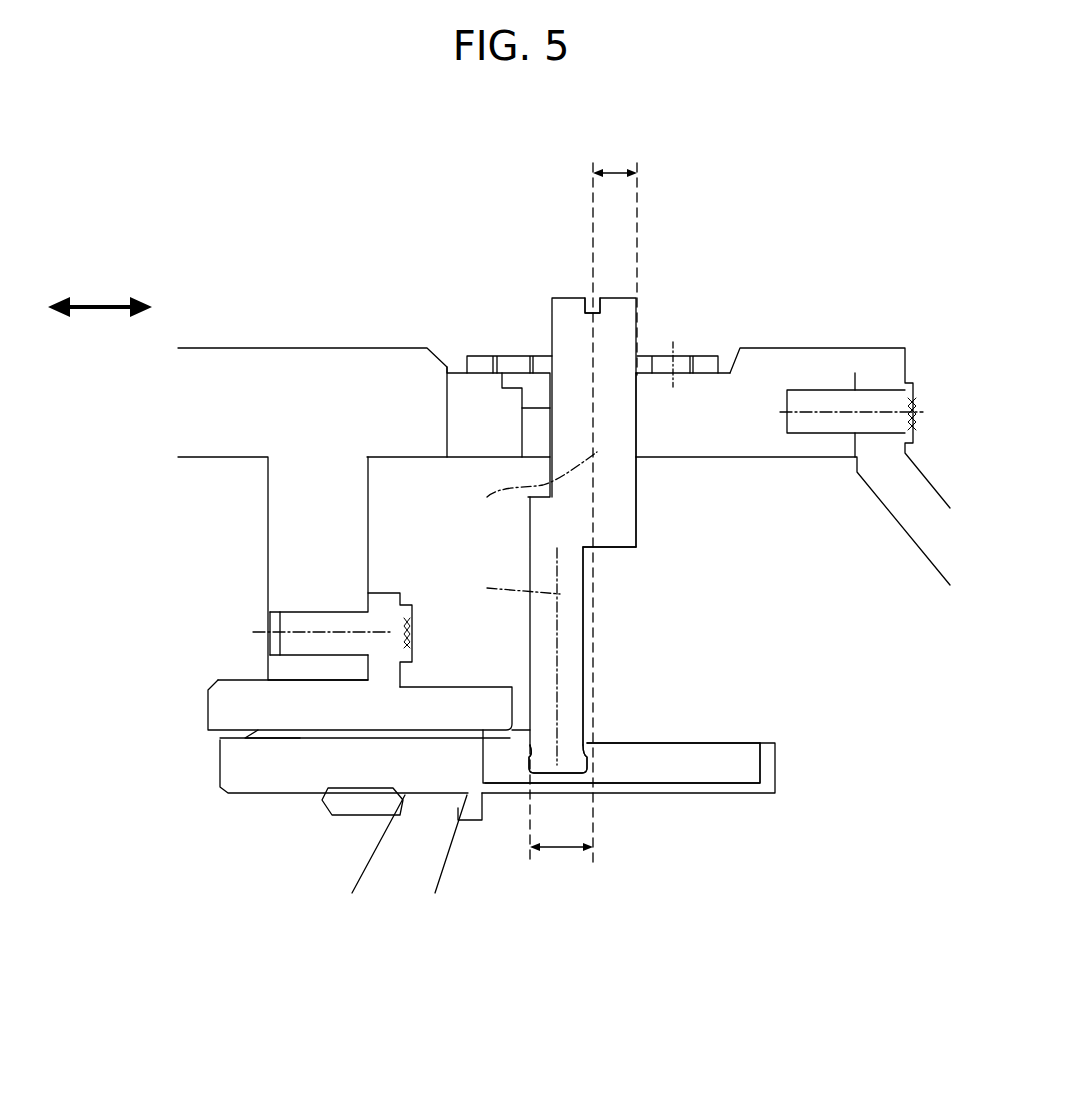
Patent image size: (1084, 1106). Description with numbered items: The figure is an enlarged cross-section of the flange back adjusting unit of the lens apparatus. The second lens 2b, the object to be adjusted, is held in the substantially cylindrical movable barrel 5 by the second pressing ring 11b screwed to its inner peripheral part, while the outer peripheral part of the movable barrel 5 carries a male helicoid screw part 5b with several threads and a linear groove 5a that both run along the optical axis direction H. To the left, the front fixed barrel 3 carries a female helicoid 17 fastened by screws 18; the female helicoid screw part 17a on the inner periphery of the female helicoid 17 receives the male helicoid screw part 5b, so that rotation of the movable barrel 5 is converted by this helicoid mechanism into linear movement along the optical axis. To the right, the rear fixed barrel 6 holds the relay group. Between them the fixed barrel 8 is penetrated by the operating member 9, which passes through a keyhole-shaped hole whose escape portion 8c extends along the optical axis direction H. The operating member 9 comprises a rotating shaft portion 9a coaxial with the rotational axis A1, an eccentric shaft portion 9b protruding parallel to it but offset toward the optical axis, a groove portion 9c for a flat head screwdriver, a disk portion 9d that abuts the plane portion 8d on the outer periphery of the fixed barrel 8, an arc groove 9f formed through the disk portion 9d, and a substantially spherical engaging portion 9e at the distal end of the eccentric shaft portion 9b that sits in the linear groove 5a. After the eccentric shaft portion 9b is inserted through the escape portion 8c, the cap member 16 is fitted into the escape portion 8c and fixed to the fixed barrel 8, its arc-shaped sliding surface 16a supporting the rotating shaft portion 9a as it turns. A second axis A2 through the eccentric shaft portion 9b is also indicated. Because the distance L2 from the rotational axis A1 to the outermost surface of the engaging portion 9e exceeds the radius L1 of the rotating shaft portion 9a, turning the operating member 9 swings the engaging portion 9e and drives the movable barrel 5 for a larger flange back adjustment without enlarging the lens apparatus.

The front fixed barrel 3 is at (288, 368).
The escape portion 8c is at (530, 433).
The cap member 16 is at (532, 388).
The arc-shaped sliding surface 16a is at (557, 380).
The plane portion 8d is at (725, 372).
The fixed barrel 8 is at (760, 403).
The rear fixed barrel 6 is at (838, 362).
The screw 18 is at (300, 626).
The female helicoid 17 is at (270, 705).
The male helicoid screw part 5b is at (283, 730).
The female helicoid screw part 17a is at (263, 742).
The movable barrel 5 is at (265, 772).
The second pressing ring 11b is at (345, 805).
The second lens 2b is at (410, 842).
The linear groove 5a is at (680, 770).
The operating member 9 is at (808, 490).
The disk portion 9d is at (592, 312).
The arc groove 9f is at (688, 371).
The groove portion 9c is at (707, 371).
The rotating shaft portion 9a is at (637, 475).
The eccentric shaft portion 9b is at (583, 637).
The engaging portion 9e is at (577, 766).
The rotational axis A1 is at (523, 484).
The second axis A2 is at (504, 590).
The radius of the rotating shaft portion L1 is at (615, 500).
The distance from the rotational axis to the outermost surface of the engaging porti L2 is at (561, 811).
The optical axis direction H is at (100, 287).